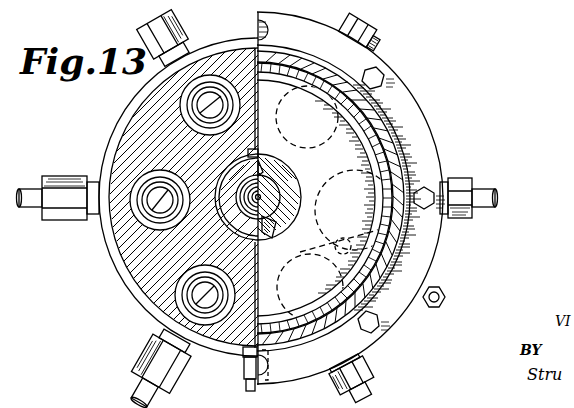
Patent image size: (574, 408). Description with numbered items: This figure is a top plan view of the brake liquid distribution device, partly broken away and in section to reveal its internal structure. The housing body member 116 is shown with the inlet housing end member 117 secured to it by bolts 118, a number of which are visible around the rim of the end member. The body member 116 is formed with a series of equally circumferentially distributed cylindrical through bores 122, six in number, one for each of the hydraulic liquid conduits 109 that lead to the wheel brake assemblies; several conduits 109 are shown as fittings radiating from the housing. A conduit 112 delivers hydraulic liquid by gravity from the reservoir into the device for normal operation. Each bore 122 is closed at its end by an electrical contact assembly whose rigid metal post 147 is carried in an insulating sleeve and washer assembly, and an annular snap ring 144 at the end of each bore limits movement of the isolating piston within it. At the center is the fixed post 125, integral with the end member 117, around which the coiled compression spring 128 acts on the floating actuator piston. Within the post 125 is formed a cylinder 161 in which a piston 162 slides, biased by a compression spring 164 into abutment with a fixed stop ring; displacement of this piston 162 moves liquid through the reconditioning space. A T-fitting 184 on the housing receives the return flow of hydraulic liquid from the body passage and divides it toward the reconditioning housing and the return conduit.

The conduit 109 is at (483, 190).
The conduit 112 is at (263, 390).
The housing body member 116 is at (138, 264).
The inlet housing end member 117 is at (395, 137).
The bolts 118 is at (385, 78).
The cylindrical through bores 122 is at (210, 77).
The fixed post 125 is at (290, 183).
The coiled compression spring 128 is at (250, 140).
The annular snap ring 144 is at (188, 312).
The rigid metal post 147 is at (150, 215).
The cylinder 161 is at (268, 205).
The piston 162 is at (270, 225).
The compression spring 164 is at (257, 162).
The T-fitting 184 is at (440, 292).